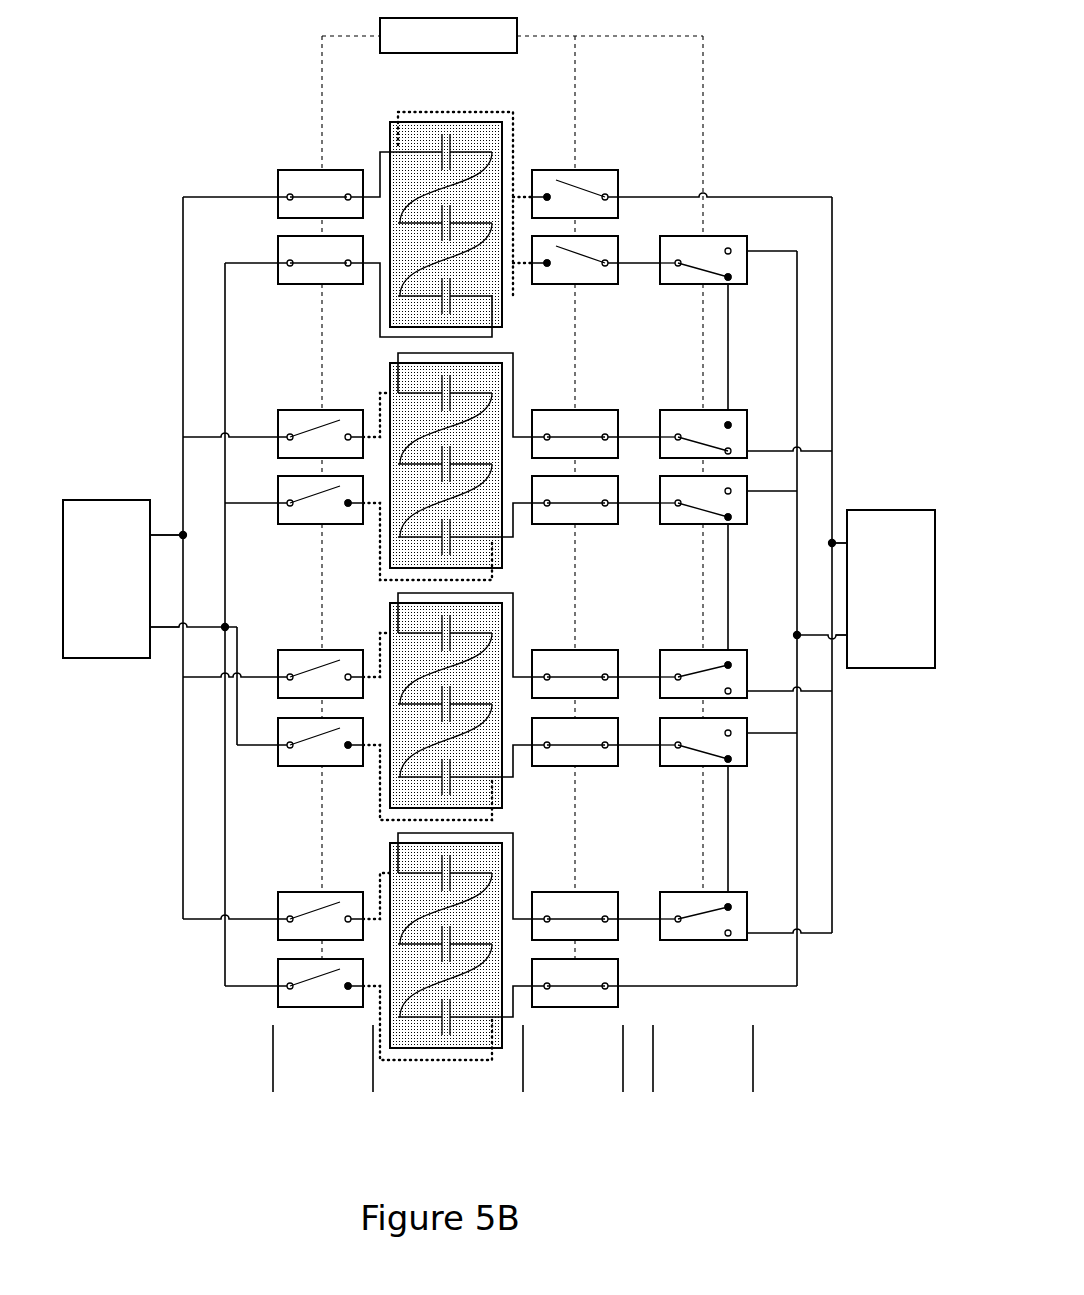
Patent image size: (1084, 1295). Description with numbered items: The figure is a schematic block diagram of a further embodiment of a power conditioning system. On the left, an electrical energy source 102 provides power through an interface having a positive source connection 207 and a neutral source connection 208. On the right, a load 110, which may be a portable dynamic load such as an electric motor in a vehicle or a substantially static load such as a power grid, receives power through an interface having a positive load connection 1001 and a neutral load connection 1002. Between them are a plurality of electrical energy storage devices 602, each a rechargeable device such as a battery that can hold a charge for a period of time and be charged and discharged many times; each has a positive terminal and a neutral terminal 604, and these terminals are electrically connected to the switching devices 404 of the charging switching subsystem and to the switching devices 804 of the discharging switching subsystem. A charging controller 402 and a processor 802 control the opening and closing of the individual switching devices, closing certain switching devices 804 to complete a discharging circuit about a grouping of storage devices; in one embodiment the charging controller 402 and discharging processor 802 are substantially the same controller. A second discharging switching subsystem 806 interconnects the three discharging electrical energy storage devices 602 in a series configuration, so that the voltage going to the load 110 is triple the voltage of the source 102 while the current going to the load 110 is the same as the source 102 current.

The electrical energy source 102 is at (106, 579).
The load 110 is at (891, 589).
The positive source connection 207 is at (130, 528).
The neutral source connection 208 is at (130, 635).
The positive load connection 1001 is at (868, 535).
The neutral load connection 1002 is at (875, 640).
The charging controller 402 is at (448, 35).
The processor 802 is at (448, 35).
The switching devices 404 is at (320, 669).
The switching devices 804 is at (575, 669).
The second discharging switching subsystem 806 is at (703, 702).
The electrical energy storage device 602 is at (446, 345).
The neutral terminal 604 is at (446, 825).